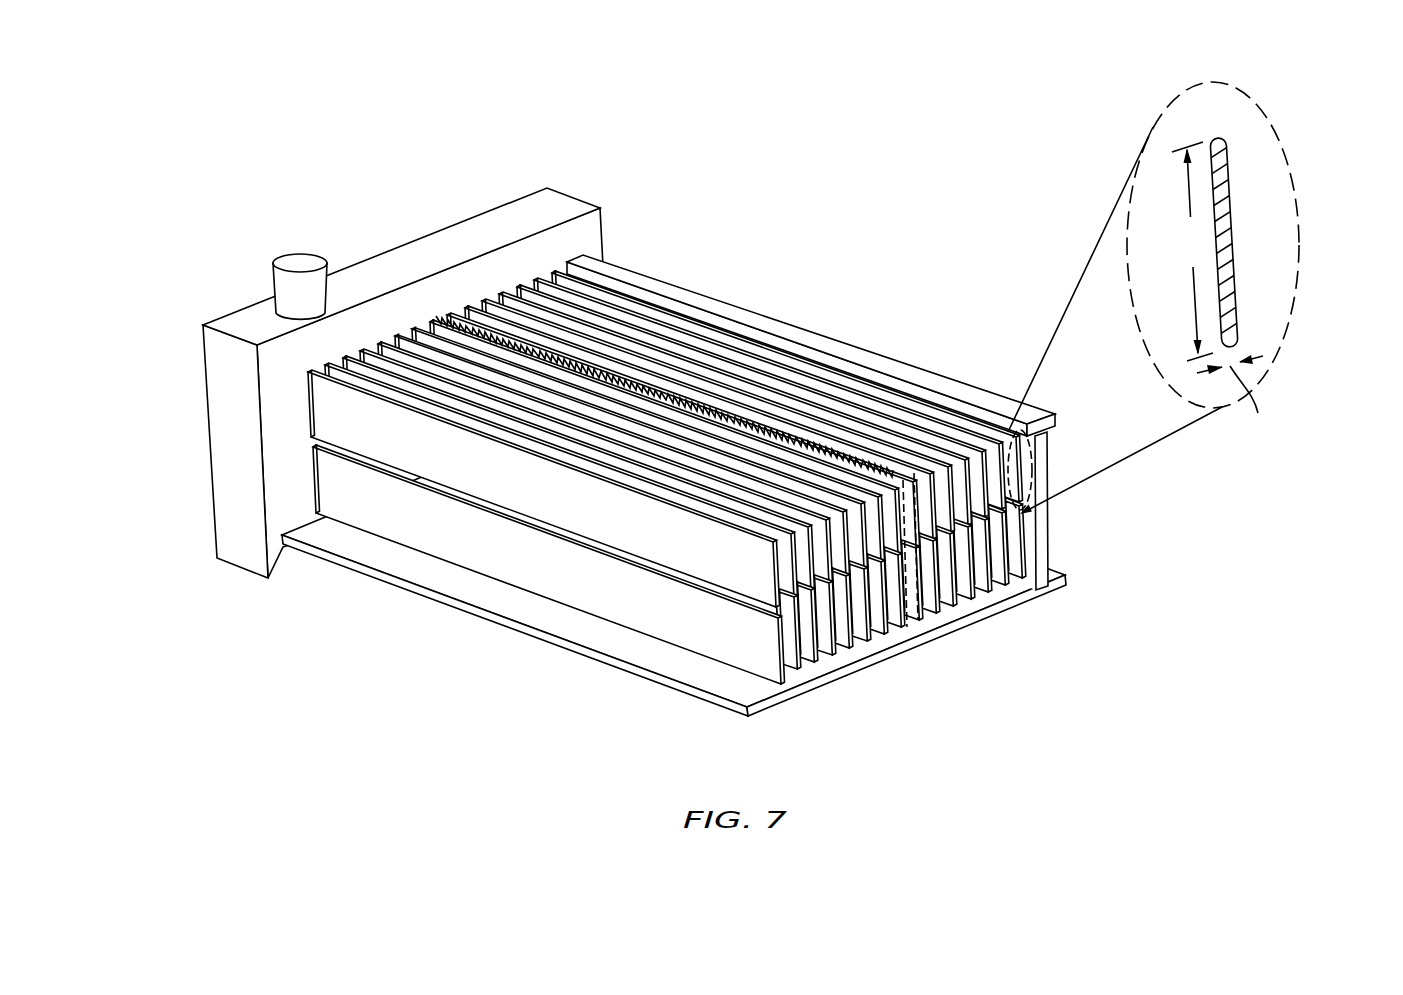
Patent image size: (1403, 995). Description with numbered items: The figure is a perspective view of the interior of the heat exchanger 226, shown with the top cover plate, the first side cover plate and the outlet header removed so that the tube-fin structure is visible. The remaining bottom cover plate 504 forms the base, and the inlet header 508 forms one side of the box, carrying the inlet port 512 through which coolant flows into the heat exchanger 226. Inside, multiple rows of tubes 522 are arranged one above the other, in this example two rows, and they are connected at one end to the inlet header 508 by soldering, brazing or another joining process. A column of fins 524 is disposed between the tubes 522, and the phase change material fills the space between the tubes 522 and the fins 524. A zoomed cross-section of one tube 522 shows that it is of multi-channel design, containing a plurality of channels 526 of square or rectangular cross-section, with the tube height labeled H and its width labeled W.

The heat exchanger 226 is at (750, 398).
The bottom cover plate 504 is at (530, 626).
The inlet header 508 is at (498, 220).
The inlet port 512 is at (306, 262).
The tubes 522 is at (648, 537).
The fins 524 is at (893, 473).
The channels 526 is at (1228, 188).